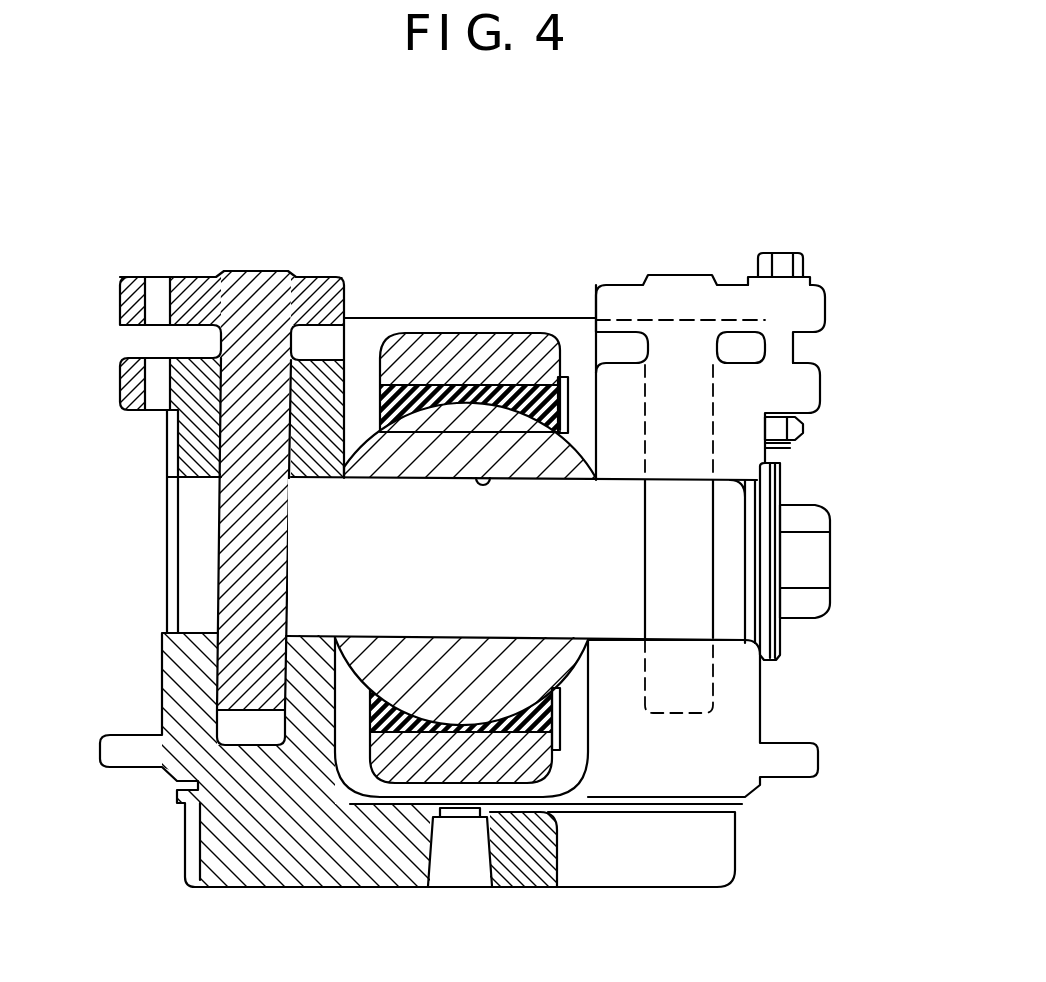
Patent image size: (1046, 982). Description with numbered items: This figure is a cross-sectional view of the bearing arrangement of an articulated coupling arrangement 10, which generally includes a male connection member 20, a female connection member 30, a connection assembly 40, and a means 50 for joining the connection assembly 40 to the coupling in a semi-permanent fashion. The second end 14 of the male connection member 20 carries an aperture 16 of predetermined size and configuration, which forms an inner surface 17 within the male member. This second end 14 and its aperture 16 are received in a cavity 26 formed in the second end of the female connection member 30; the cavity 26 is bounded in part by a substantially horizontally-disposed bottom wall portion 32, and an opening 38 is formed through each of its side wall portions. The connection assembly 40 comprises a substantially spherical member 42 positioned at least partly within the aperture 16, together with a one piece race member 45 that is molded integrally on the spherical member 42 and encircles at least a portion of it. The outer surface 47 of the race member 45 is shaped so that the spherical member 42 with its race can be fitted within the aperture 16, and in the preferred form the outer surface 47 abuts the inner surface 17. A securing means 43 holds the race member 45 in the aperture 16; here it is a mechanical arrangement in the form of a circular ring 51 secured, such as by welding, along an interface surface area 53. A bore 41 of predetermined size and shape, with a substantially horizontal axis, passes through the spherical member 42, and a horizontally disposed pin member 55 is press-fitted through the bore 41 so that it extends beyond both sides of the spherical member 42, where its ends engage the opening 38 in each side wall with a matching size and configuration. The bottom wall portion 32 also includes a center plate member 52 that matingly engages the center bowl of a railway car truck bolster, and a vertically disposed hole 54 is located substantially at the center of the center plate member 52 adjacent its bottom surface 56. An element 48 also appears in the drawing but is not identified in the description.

The articulated coupling arrangement 10 is at (362, 248).
The second end 14 is at (476, 340).
The aperture 16 is at (532, 405).
The inner surface 17 is at (556, 704).
The male connection member 20 is at (519, 272).
The cavity 26 is at (358, 785).
The female connection member 30 is at (785, 713).
The bottom wall portion 32 is at (543, 812).
The opening 38 is at (190, 482).
The connection assembly 40 is at (357, 698).
The bore 41 is at (488, 476).
The spherical member 42 is at (430, 355).
The securing means 43 is at (579, 340).
The one piece race member 45 is at (372, 340).
The outer surface 47 is at (398, 333).
The ball surface 48 is at (432, 423).
The means for joining 50 is at (826, 268).
The circular ring 51 is at (570, 412).
The center plate member 52 is at (618, 873).
The interface surface area 53 is at (570, 378).
The vertically disposed hole 54 is at (458, 872).
The pin member 55 is at (187, 569).
The bottom surface 56 is at (705, 890).